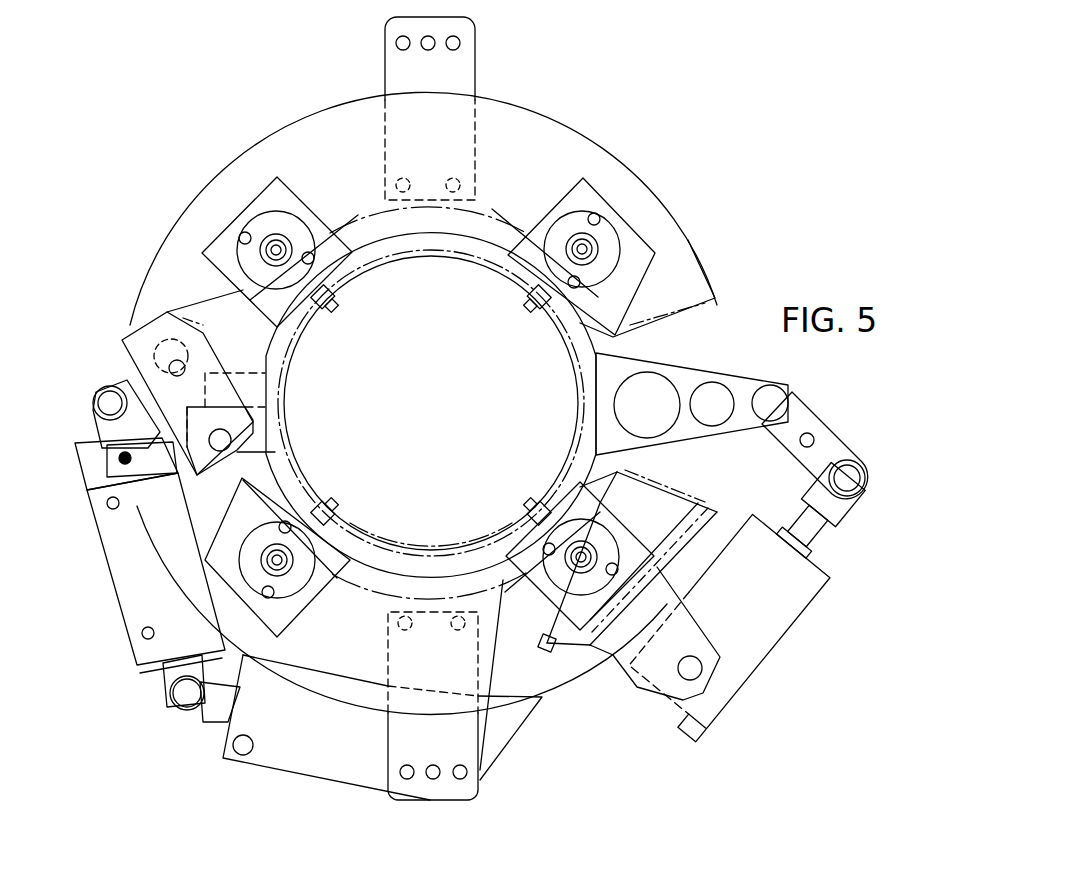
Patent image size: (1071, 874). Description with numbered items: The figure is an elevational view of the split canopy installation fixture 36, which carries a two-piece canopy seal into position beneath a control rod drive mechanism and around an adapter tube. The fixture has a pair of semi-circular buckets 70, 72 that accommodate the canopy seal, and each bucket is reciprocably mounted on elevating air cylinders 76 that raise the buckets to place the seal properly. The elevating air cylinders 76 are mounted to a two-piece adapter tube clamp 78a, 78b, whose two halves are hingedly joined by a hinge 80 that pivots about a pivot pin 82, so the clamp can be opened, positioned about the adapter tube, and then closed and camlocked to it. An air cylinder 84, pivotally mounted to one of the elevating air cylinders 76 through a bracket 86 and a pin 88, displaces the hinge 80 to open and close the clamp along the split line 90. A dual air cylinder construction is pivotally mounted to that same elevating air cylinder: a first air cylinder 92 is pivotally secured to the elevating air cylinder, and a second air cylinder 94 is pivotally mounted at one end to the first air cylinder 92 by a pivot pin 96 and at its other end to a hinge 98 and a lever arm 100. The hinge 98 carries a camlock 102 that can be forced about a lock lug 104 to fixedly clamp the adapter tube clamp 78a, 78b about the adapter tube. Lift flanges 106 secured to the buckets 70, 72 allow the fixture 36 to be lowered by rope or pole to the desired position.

The split canopy installation fixture 36 is at (205, 188).
The semi-circular bucket 70 is at (325, 106).
The semi-circular bucket 72 is at (590, 670).
The elevating air cylinder 76 is at (297, 225).
The adapter tube clamp (first piece) 78a is at (452, 548).
The adapter tube clamp (second piece) 78b is at (432, 260).
The hinge 80 is at (707, 368).
The pivot pin 82 is at (788, 400).
The air cylinder 84 is at (780, 618).
The bracket 86 is at (700, 612).
The pin 88 is at (690, 675).
The split line 90 is at (285, 417).
The first air cylinder 92 is at (330, 755).
The second air cylinder 94 is at (98, 540).
The pivot pin 96 is at (177, 710).
The hinge 98 is at (135, 323).
The lever arm 100 is at (120, 370).
The camlock 102 is at (170, 362).
The lock lug 104 is at (282, 385).
The lift flange 106 is at (385, 44).